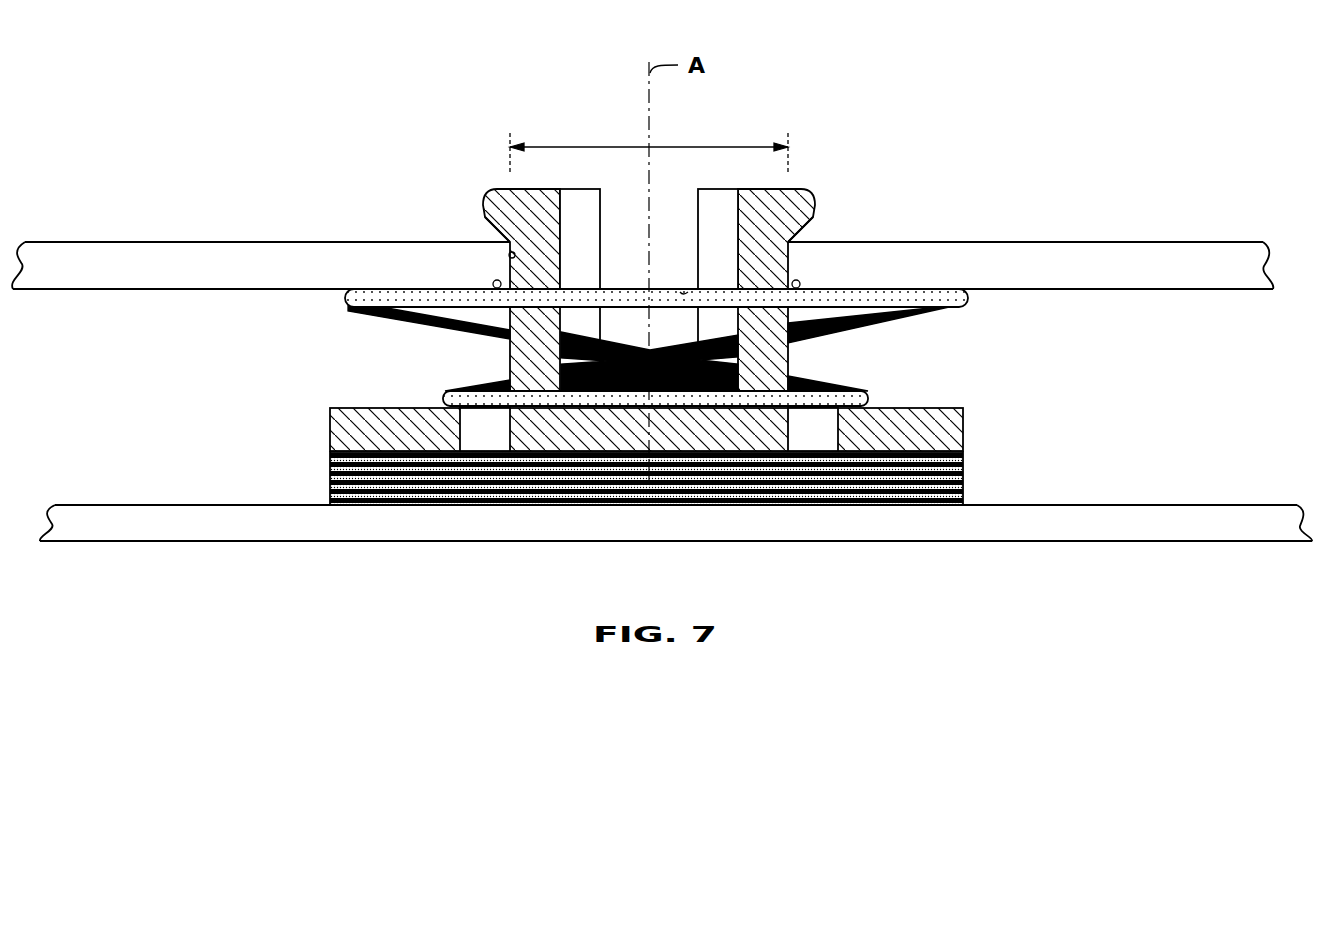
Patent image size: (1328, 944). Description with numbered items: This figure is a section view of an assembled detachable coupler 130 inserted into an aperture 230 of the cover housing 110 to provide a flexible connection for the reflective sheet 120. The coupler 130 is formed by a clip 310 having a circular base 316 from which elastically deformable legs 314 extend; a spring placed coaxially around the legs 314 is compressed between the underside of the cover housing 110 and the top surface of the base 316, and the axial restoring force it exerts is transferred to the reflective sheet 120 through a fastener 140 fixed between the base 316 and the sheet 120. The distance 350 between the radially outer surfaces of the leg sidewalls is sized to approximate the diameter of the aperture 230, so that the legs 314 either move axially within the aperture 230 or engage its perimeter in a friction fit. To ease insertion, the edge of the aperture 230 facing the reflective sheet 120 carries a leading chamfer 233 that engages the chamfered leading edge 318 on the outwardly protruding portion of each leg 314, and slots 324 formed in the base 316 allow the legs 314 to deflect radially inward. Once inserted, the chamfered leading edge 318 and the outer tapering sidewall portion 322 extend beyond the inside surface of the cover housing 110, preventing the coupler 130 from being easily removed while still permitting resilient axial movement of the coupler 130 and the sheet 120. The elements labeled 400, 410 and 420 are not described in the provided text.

The cover housing 110 is at (1221, 242).
The reflective sheet 120 is at (1237, 505).
The detachable coupler 130 is at (530, 84).
The fastener 140 is at (965, 478).
The aperture 230 is at (510, 252).
The leading chamfer 233 is at (508, 288).
The clip 310 is at (470, 128).
The legs 314 is at (510, 362).
The base 316 is at (355, 407).
The chamfered leading edge 318 is at (495, 197).
The outer tapering sidewall portion 322 is at (505, 240).
The slots 324 is at (649, 429).
The distance 350 is at (680, 147).
The spring member 400 is at (898, 320).
The lower plate 410 is at (868, 402).
The upper plate 420 is at (967, 307).